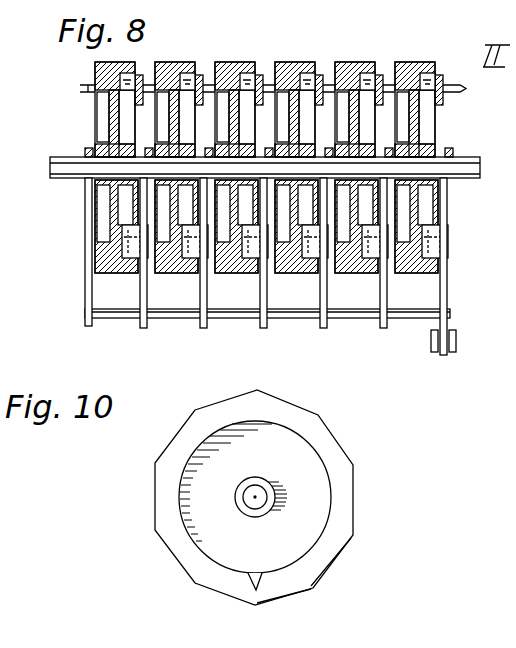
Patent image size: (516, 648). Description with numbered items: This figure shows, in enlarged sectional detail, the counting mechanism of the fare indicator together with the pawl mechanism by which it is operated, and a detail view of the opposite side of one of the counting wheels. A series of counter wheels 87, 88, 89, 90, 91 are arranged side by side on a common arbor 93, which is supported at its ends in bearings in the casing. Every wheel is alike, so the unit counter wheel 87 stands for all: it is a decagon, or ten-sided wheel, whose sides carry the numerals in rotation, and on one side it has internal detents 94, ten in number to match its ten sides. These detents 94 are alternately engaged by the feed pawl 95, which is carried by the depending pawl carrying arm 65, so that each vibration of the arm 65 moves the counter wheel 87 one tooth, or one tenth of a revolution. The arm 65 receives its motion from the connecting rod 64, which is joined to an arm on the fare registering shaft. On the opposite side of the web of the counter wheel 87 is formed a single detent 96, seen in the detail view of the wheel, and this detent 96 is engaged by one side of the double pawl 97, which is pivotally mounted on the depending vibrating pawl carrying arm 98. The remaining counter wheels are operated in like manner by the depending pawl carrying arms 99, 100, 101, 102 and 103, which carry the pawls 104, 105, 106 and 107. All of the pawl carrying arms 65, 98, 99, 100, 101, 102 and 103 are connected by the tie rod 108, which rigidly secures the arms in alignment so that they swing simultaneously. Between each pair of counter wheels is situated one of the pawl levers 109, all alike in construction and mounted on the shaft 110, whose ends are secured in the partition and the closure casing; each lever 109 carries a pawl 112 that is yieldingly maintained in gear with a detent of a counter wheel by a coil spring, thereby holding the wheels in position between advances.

In FIG. 8, the connecting rod 64 is at (456, 349).
In FIG. 8, the pawl carrying arm 65 is at (447, 300).
In FIG. 8, the counter wheel 87 is at (406, 64).
In FIG. 10, the counter wheel 87 is at (352, 467).
In FIG. 8, the counter wheel 88 is at (346, 63).
In FIG. 8, the counter wheel 89 is at (286, 63).
In FIG. 8, the counter wheel 90 is at (238, 64).
In FIG. 8, the counter wheel 91 is at (180, 63).
In FIG. 8, the arbor 93 is at (480, 165).
In FIG. 10, the arbor 93 is at (252, 498).
In FIG. 8, the internal detents 94 is at (133, 80).
In FIG. 8, the feed pawl 95 is at (440, 248).
In FIG. 10, the single detent 96 is at (250, 575).
In FIG. 8, the double pawl 97 is at (394, 258).
In FIG. 8, the pawl carrying arm 98 is at (383, 328).
In FIG. 8, the pawl carrying arm 99 is at (323, 328).
In FIG. 8, the pawl carrying arm 100 is at (263, 328).
In FIG. 8, the pawl carrying arm 101 is at (203, 328).
In FIG. 8, the pawl carrying arm 102 is at (143, 328).
In FIG. 8, the pawl carrying arm 103 is at (85, 326).
In FIG. 8, the pawl 104 is at (330, 258).
In FIG. 8, the pawl 105 is at (270, 258).
In FIG. 8, the pawl 106 is at (208, 258).
In FIG. 8, the pawl 107 is at (148, 258).
In FIG. 8, the tie rod 108 is at (350, 318).
In FIG. 8, the pawl levers 109 is at (141, 74).
In FIG. 8, the shaft 110 is at (80, 87).
In FIG. 8, the pawl 112 is at (128, 88).